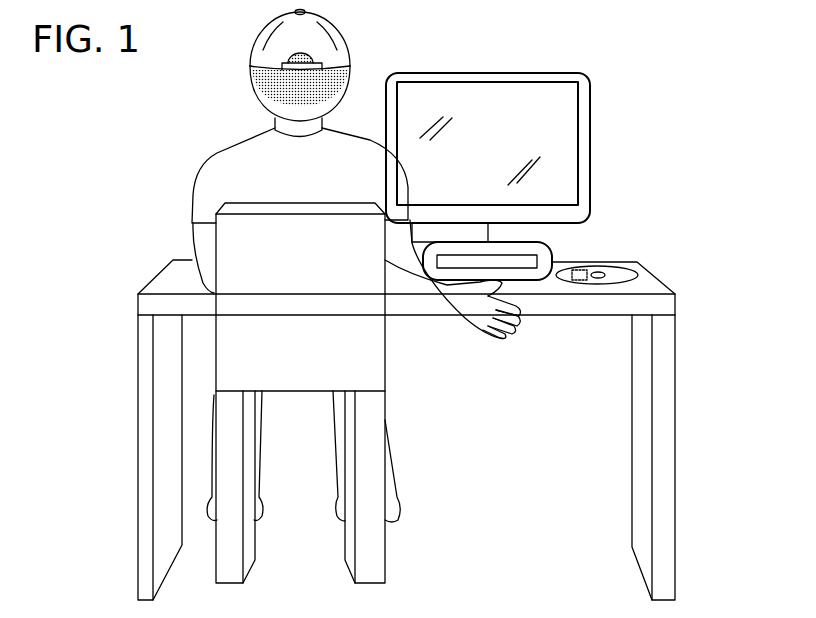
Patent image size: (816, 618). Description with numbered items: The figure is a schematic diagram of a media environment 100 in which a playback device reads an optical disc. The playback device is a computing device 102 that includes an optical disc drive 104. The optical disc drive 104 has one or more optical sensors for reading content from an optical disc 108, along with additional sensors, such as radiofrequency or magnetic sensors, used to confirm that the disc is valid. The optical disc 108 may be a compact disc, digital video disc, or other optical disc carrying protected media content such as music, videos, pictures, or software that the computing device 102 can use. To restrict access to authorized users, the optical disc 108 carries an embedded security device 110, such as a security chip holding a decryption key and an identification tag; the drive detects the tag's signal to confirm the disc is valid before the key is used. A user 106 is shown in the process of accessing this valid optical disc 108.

The media environment 100 is at (674, 54).
The computing device 102 is at (562, 57).
The optical disc drive 104 is at (536, 259).
The user 106 is at (225, 155).
The optical disc 108 is at (628, 274).
The security device 110 is at (580, 281).